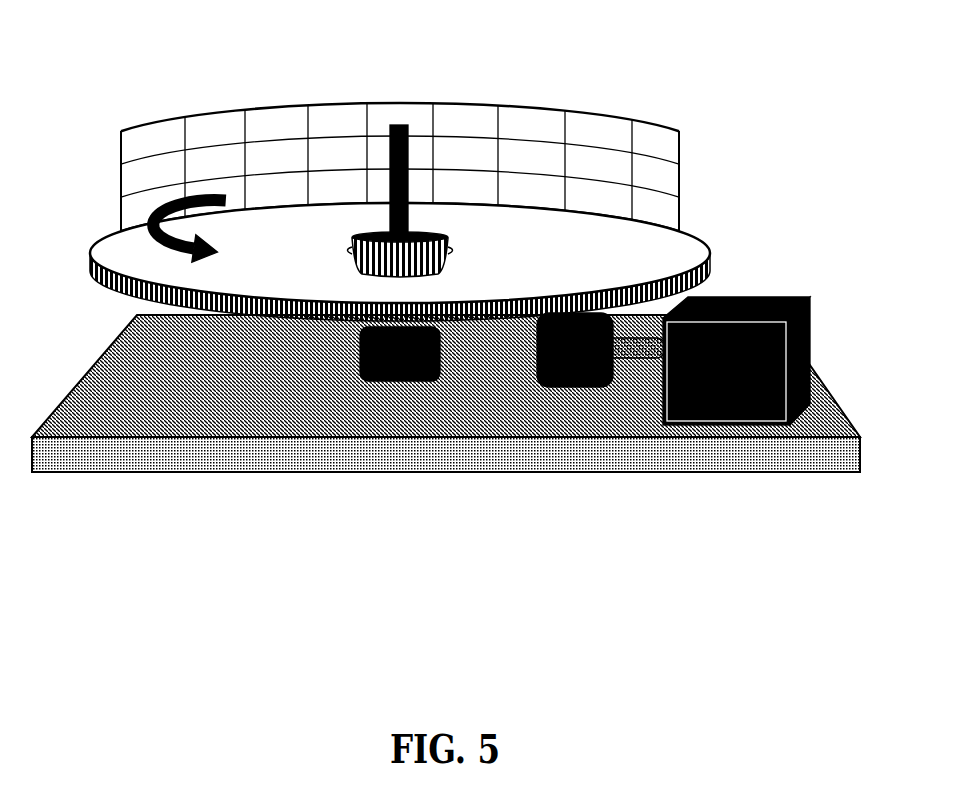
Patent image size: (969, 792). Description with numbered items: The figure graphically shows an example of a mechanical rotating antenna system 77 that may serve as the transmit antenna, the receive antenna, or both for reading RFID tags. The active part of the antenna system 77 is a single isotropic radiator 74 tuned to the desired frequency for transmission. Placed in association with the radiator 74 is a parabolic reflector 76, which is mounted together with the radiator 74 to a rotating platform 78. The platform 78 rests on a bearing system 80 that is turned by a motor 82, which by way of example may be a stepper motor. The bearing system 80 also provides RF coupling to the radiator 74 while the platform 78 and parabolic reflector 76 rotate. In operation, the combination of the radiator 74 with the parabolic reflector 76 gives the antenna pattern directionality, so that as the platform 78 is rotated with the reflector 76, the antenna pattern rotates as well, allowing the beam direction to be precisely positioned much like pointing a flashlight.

The mechanical rotating antenna system 77 is at (663, 69).
The parabolic reflector 76 is at (472, 102).
The isotropic radiator 74 is at (410, 180).
The rotating platform 78 is at (233, 315).
The bearing system 80 is at (418, 382).
The motor 82 is at (700, 428).